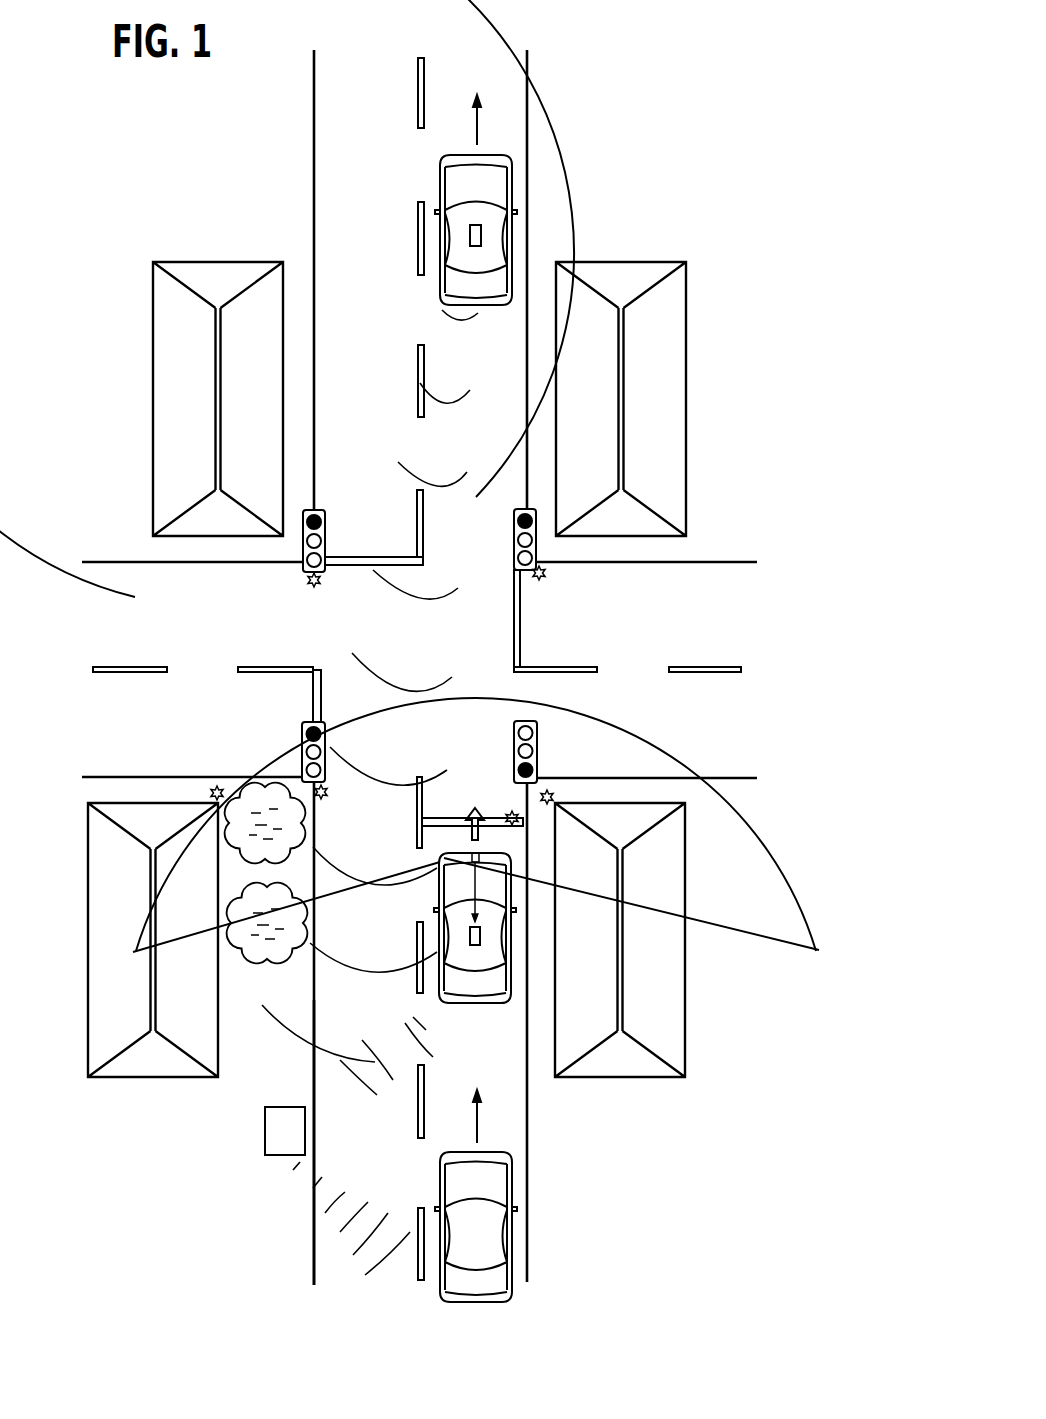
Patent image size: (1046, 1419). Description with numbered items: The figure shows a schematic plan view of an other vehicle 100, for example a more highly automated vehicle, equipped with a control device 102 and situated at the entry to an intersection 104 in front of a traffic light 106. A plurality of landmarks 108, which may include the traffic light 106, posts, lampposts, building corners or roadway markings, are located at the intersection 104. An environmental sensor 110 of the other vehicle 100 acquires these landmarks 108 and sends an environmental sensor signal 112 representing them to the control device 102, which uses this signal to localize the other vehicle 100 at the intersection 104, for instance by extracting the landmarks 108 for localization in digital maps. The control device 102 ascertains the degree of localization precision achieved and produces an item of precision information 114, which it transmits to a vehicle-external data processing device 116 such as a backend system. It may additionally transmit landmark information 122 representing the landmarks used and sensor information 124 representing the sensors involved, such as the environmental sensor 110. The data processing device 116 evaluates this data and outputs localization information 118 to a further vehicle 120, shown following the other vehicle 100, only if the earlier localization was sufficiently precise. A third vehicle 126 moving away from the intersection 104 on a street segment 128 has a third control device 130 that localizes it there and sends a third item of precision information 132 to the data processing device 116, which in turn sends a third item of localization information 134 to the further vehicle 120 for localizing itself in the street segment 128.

The other vehicle 100 is at (409, 501).
The control device 102 is at (482, 940).
The intersection 104 is at (472, 655).
The traffic light 106 is at (537, 733).
The landmarks 108 is at (310, 582).
The environmental sensor 110 is at (490, 848).
The environmental sensor signal 112 is at (438, 900).
The precision information 114 is at (202, 1142).
The vehicle-external data processing device 116 is at (265, 1145).
The localization information 118 is at (305, 1140).
The further vehicle 120 is at (512, 1243).
The landmark information 122 is at (202, 1142).
The sensor information 124 is at (317, 1077).
The third vehicle 126 is at (523, 230).
The street segment 128 is at (502, 120).
The third control device 130 is at (481, 232).
The third item of precision information 132 is at (450, 480).
The third item of localization information 134 is at (345, 1228).